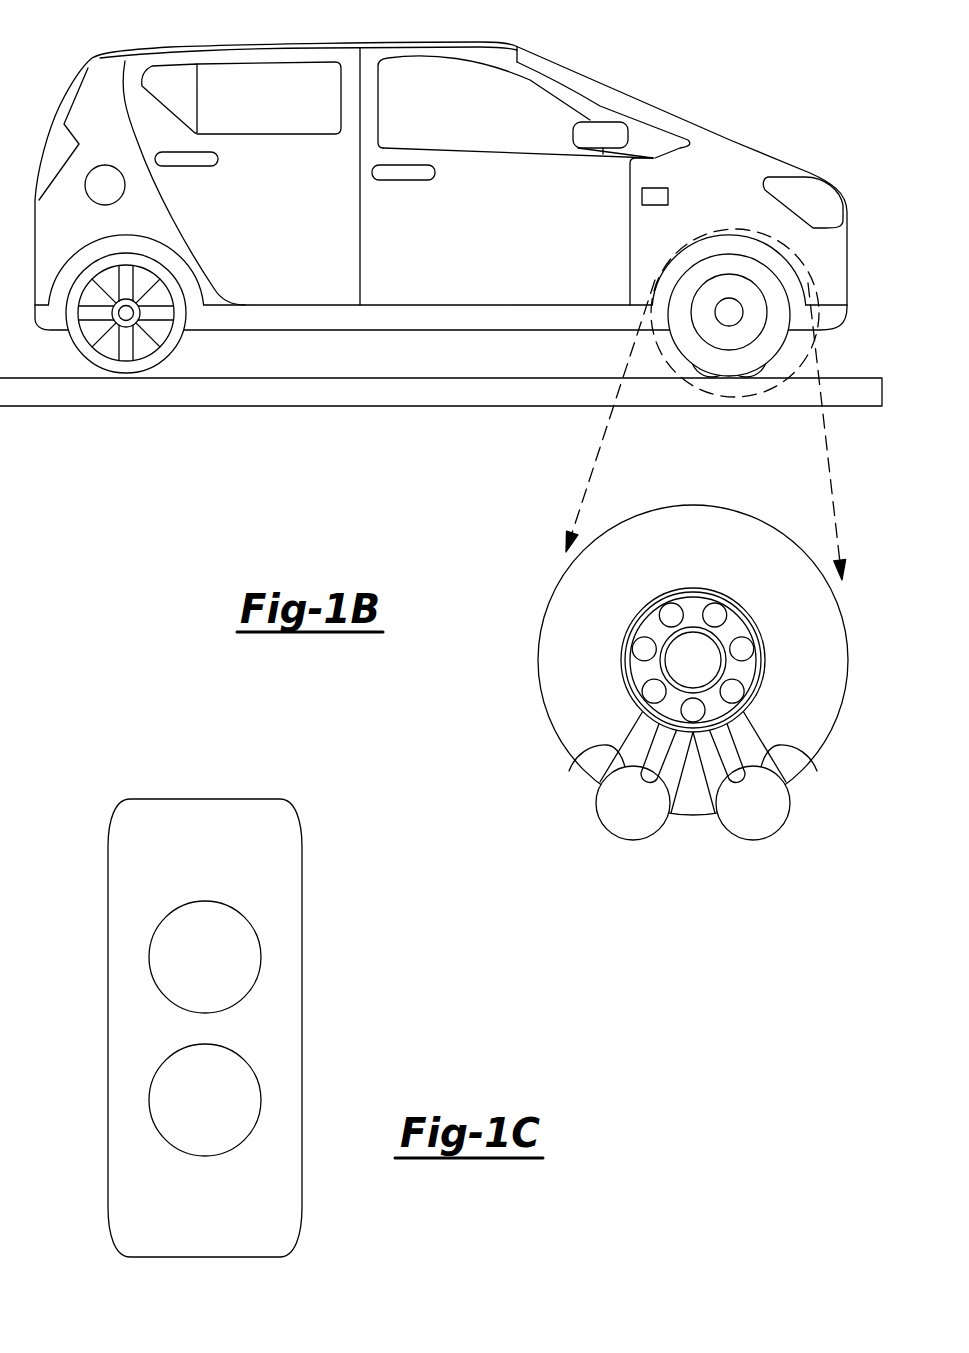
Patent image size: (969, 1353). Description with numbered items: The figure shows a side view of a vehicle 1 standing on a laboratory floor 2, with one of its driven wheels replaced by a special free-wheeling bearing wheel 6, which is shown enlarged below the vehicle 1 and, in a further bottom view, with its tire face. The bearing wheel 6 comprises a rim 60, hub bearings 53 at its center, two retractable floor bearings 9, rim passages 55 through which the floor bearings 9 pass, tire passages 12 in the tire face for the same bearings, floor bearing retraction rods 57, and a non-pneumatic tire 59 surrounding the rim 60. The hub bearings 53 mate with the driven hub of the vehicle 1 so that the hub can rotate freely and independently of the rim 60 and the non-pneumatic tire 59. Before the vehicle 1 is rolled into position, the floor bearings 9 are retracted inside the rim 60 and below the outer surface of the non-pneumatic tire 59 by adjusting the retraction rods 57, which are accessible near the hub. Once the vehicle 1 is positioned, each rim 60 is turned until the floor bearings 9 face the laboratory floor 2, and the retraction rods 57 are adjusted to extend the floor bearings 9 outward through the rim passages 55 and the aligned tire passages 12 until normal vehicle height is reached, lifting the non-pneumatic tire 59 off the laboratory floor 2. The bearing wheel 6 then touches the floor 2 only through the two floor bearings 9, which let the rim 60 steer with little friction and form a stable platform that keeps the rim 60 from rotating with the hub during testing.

In FIG. 1B, the vehicle 1 is at (122, 66).
In FIG. 1B, the laboratory floor 2 is at (128, 406).
In FIG. 1B, the bearing wheel 6 is at (743, 313).
In FIG. 1B, the floor bearings 9 is at (620, 815).
In FIG. 1C, the floor bearings 9 is at (180, 967).
In FIG. 1C, the tire passages 12 is at (263, 958).
In FIG. 1B, the hub bearings 53 is at (695, 587).
In FIG. 1B, the rim passages 55 is at (588, 758).
In FIG. 1B, the floor bearing retraction rods 57 is at (653, 736).
In FIG. 1B, the non-pneumatic tire 59 is at (848, 660).
In FIG. 1C, the non-pneumatic tire 59 is at (220, 825).
In FIG. 1B, the rim 60 is at (574, 657).